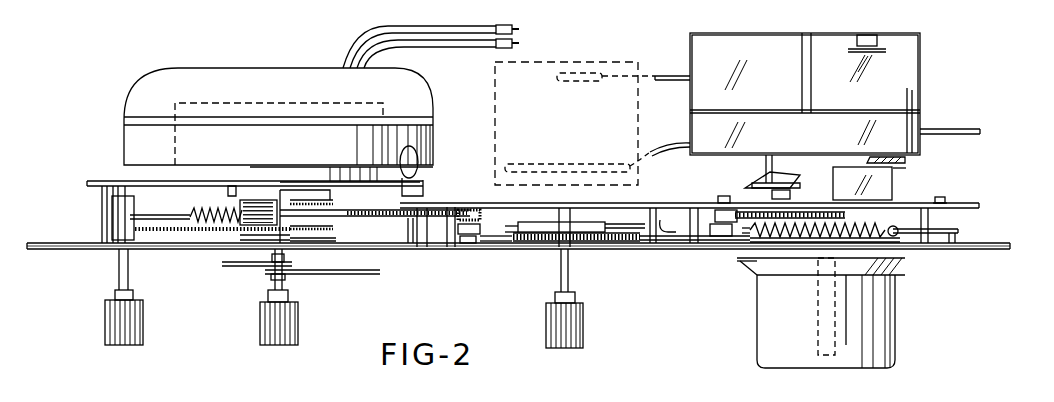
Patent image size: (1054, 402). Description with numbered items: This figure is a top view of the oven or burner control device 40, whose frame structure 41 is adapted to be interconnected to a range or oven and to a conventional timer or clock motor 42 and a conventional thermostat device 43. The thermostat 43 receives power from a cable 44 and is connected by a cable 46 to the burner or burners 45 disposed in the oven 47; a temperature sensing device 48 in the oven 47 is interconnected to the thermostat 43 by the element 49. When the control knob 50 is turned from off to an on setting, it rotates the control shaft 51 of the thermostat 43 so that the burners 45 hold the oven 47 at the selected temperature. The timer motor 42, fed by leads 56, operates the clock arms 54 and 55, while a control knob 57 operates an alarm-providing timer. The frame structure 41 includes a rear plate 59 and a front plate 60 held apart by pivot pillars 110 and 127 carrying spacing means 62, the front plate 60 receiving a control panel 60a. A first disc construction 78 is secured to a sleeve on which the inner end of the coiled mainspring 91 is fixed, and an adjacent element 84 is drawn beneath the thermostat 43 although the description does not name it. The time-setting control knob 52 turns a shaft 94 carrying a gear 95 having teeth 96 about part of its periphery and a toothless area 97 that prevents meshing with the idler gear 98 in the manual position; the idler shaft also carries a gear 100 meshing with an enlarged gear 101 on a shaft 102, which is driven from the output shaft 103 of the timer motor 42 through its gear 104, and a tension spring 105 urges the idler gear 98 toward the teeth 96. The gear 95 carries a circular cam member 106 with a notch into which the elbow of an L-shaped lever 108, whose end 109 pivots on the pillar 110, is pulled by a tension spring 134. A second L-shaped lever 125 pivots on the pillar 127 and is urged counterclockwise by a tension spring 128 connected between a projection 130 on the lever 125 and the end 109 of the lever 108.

The oven or burner control device 40 is at (80, 139).
The frame structure 41 is at (62, 242).
The timer or clock motor 42 is at (212, 105).
The thermostat device 43 is at (835, 42).
The cable 44 is at (943, 129).
The burner or burners 45 is at (542, 168).
The cable 46 is at (655, 151).
The oven 47 is at (562, 62).
The temperature sensing device 48 is at (594, 74).
The element 49 is at (660, 76).
The control knob 50 is at (885, 325).
The control shaft 51 is at (897, 290).
The control knob 52 is at (583, 325).
The clock arm 54 is at (240, 267).
The clock arm 55 is at (345, 276).
The leads 56 is at (420, 44).
The control knob 57 is at (144, 324).
The rear plate 59 is at (957, 207).
The front plate 60 is at (957, 252).
The control panel 60a is at (986, 252).
The spacing means 62 is at (103, 208).
The first disc construction 78 is at (762, 246).
The block 84 is at (900, 214).
The coiled spring or mainspring 91 is at (808, 239).
The shaft 94 is at (572, 279).
The gear 95 is at (510, 236).
The teeth 96 is at (625, 235).
The area 97 is at (492, 243).
The idler gear 98 is at (462, 246).
The gear 100 is at (489, 204).
The enlarged gear 101 is at (432, 199).
The shaft 102 is at (420, 243).
The output shaft 103 is at (236, 191).
The gear 104 is at (340, 217).
The tension spring 105 is at (465, 246).
The cam member 106 is at (580, 225).
The L-shaped lever 108 is at (693, 216).
The end 109 is at (721, 245).
The pivot pillar 110 is at (724, 209).
The L-shaped lever 125 is at (963, 231).
The pivot pillar 127 is at (942, 199).
The tension spring 128 is at (790, 239).
The projection 130 is at (897, 236).
The tension spring 134 is at (667, 216).